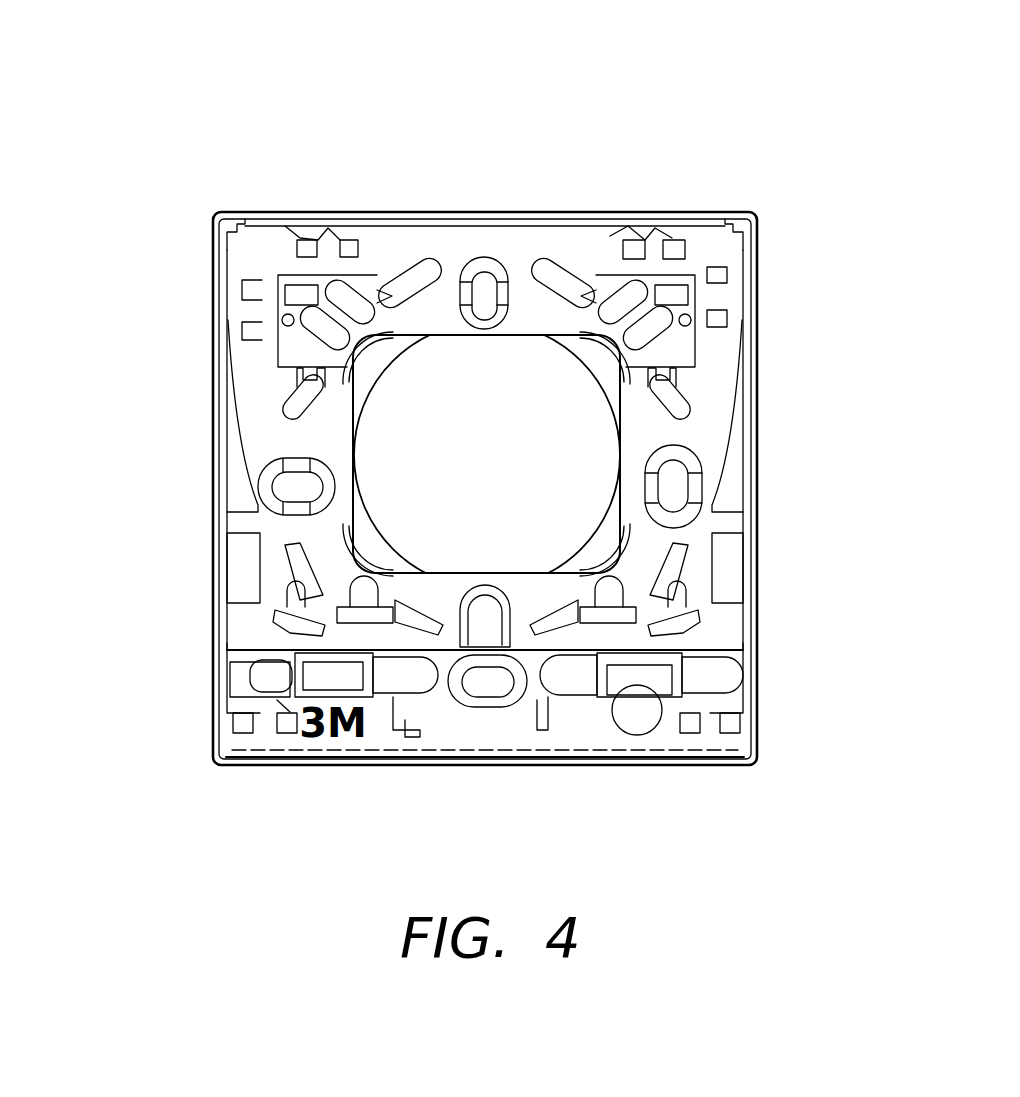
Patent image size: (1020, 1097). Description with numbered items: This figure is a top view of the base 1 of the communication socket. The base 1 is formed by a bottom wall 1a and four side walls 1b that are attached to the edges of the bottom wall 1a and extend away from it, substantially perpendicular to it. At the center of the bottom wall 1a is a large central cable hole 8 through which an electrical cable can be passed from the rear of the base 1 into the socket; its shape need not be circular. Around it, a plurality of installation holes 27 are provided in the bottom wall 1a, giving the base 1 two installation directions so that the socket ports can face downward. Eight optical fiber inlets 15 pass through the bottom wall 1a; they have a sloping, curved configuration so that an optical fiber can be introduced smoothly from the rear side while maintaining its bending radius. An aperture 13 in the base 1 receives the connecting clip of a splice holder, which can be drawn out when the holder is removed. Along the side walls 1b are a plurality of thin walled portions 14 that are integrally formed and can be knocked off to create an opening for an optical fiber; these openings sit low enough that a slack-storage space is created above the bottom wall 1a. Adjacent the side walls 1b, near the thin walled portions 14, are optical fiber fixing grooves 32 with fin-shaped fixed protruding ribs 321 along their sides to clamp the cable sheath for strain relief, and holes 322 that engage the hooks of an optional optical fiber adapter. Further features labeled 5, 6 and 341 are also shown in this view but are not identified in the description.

The base 1 is at (718, 98).
The bottom wall 1a is at (458, 248).
The side walls 1b is at (226, 440).
The contact bracket 5 is at (590, 655).
The mounting hole 6 is at (693, 670).
The central cable hole 8 is at (520, 360).
The aperture 13 is at (297, 247).
The thin walled portions 14 is at (210, 247).
The optical fiber inlets 15 is at (410, 268).
The installation holes 27 is at (668, 488).
The optical fiber fixing grooves 32 is at (265, 245).
The fixed protruding ribs 321 is at (243, 323).
The holes 322 is at (290, 717).
The hook 341 is at (413, 735).